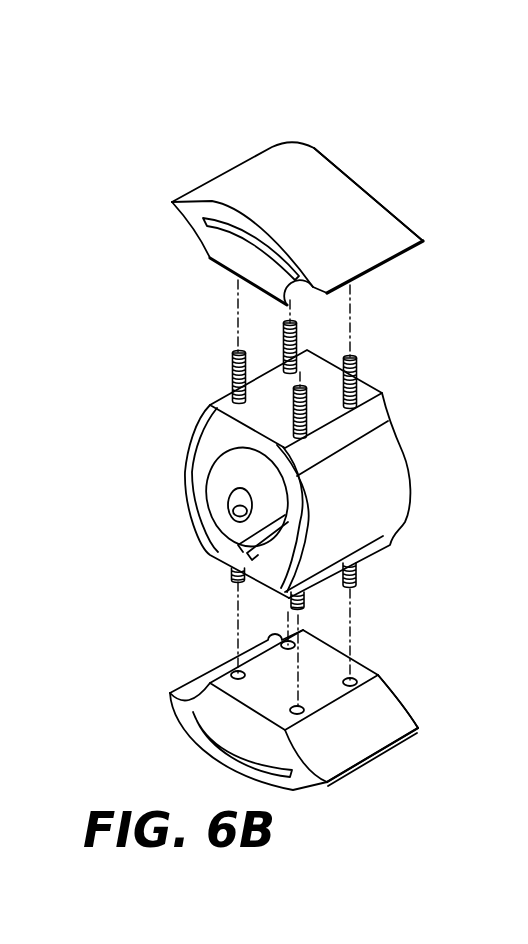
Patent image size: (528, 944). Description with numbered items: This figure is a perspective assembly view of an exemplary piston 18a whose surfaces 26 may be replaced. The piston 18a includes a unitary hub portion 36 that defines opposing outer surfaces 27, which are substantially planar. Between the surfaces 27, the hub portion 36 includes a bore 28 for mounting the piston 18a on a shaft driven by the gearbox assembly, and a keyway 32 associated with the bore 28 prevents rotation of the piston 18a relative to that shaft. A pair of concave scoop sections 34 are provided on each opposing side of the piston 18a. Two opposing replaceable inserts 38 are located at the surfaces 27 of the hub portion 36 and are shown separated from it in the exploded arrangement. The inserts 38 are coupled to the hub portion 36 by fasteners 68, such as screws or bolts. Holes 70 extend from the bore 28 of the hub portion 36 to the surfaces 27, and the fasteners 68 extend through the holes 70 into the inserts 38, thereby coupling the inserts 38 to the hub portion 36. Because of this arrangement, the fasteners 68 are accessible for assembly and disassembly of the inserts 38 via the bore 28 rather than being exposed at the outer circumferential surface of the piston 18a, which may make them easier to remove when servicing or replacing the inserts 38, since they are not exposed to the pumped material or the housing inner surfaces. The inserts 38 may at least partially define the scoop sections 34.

The piston 18a is at (160, 125).
The surfaces 26 is at (346, 95).
The opposing outer surfaces 27 is at (270, 380).
The bore 28 is at (183, 475).
The keyway 32 is at (230, 562).
The concave scoop sections 34 is at (205, 240).
The unitary hub portion 36 is at (180, 473).
The replaceable inserts 38 is at (378, 202).
The fasteners 68 is at (360, 362).
The holes 70 is at (232, 395).